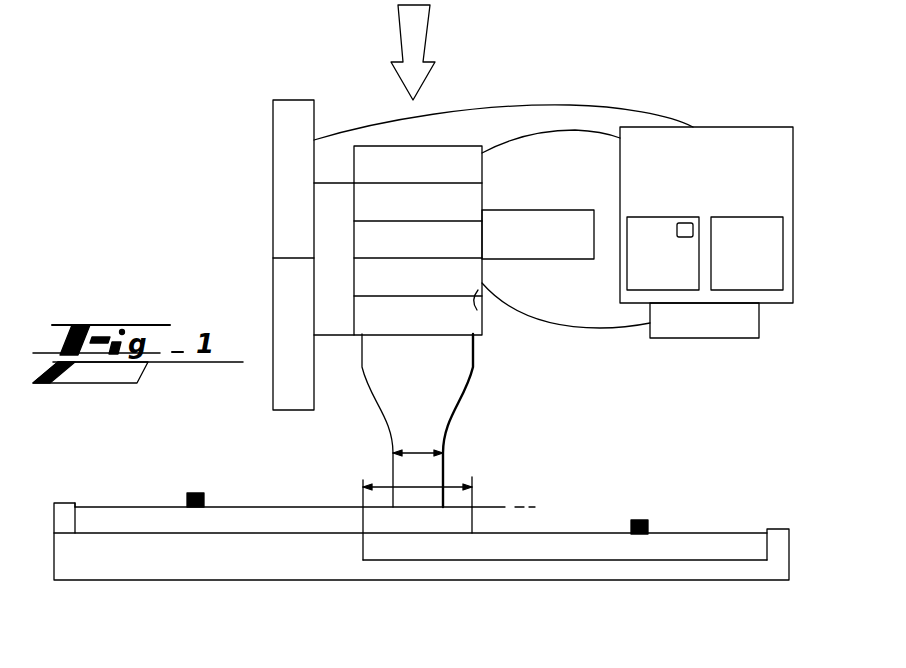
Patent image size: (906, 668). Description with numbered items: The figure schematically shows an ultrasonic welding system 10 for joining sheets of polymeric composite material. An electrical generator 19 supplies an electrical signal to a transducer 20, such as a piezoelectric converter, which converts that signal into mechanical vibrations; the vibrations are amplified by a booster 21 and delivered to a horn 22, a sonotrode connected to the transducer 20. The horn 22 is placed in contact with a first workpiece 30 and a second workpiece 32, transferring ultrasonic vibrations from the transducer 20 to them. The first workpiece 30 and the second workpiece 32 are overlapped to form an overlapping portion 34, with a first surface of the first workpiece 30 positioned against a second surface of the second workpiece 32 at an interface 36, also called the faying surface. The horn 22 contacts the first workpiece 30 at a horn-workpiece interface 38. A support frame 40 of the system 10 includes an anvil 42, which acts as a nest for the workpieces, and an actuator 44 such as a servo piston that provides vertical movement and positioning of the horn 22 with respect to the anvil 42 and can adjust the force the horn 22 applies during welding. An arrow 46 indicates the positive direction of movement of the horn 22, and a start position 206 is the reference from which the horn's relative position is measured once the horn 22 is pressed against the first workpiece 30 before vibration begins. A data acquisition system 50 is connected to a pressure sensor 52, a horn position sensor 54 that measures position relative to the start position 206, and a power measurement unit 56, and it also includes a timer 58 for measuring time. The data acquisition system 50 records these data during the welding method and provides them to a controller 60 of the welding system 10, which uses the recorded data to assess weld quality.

The welding system 10 is at (530, 28).
The electrical generator 19 is at (550, 249).
The transducer 20 is at (469, 212).
The booster 21 is at (480, 420).
The horn 22 is at (448, 377).
The first workpiece 30 is at (252, 513).
The second workpiece 32 is at (608, 538).
The overlapping portion 34 is at (450, 480).
The interface 36 is at (408, 533).
The horn-workpiece interface 38 is at (430, 507).
The support frame 40 is at (182, 285).
The anvil 42 is at (123, 559).
The actuator 44 is at (368, 197).
The arrow 46 is at (402, 40).
The data acquisition system 50 is at (678, 268).
The pressure sensor 52 is at (447, 152).
The horn position sensor 54 is at (467, 325).
The power measurement unit 56 is at (273, 177).
The timer 58 is at (553, 221).
The controller 60 is at (766, 268).
The start position 206 is at (529, 508).